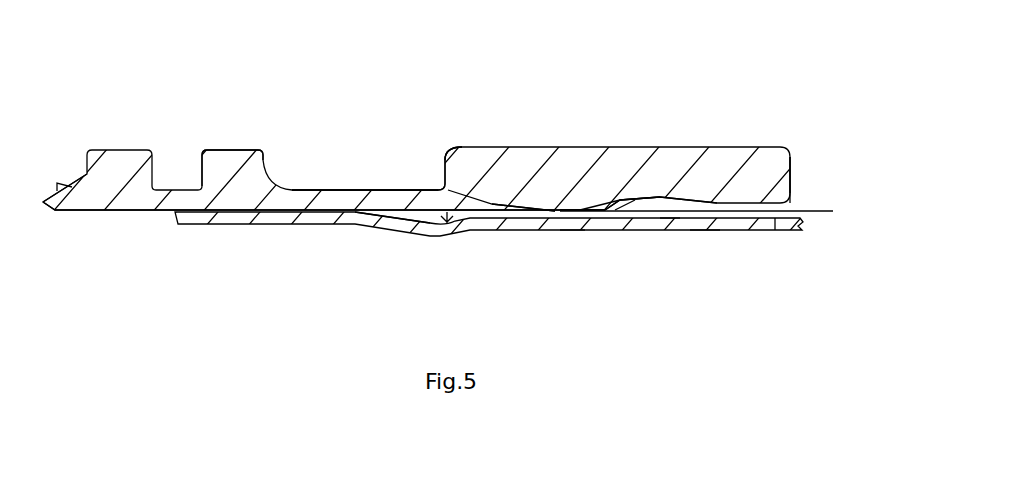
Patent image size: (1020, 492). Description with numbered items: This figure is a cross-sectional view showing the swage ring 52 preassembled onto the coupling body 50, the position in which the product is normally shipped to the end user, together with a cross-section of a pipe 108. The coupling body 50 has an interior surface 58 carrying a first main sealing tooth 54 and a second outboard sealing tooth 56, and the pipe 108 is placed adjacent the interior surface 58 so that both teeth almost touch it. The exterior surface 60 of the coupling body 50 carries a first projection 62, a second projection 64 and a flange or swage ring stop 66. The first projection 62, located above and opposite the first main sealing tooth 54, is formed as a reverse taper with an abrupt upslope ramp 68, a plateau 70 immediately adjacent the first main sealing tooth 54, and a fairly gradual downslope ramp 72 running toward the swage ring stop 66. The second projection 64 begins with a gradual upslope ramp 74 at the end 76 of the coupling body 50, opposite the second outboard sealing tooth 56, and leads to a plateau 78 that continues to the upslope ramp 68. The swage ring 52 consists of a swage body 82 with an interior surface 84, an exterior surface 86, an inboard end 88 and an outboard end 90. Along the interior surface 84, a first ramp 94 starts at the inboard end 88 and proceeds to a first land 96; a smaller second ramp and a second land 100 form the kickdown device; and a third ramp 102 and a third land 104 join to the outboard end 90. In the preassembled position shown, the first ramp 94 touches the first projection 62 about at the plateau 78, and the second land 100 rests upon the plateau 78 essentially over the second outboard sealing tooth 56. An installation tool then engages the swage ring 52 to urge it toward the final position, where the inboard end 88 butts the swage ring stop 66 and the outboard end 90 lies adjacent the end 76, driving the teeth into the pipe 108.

The coupling body 50 is at (313, 78).
The swage ring 52 is at (722, 147).
The first main sealing tooth 54 is at (447, 220).
The second outboard sealing tooth 56 is at (572, 232).
The interior surface 58 is at (302, 210).
The exterior surface 60 is at (582, 200).
The first projection 62 is at (453, 148).
The second projection 64 is at (606, 198).
The swage ring stop 66 is at (230, 150).
The upslope ramp 68 is at (512, 192).
The plateau 70 is at (405, 190).
The downslope ramp 72 is at (360, 190).
The upslope ramp 74 is at (640, 196).
The end 76 is at (833, 211).
The plateau 78 is at (588, 200).
The swage body 82 is at (575, 198).
The interior surface 84 is at (670, 198).
The exterior surface 86 is at (592, 200).
The inboard end 88 is at (441, 150).
The outboard end 90 is at (792, 165).
The first ramp 94 is at (427, 220).
The first land 96 is at (535, 195).
The second land 100 is at (625, 203).
The third ramp 102 is at (702, 231).
The third land 104 is at (790, 205).
The pipe 108 is at (775, 230).